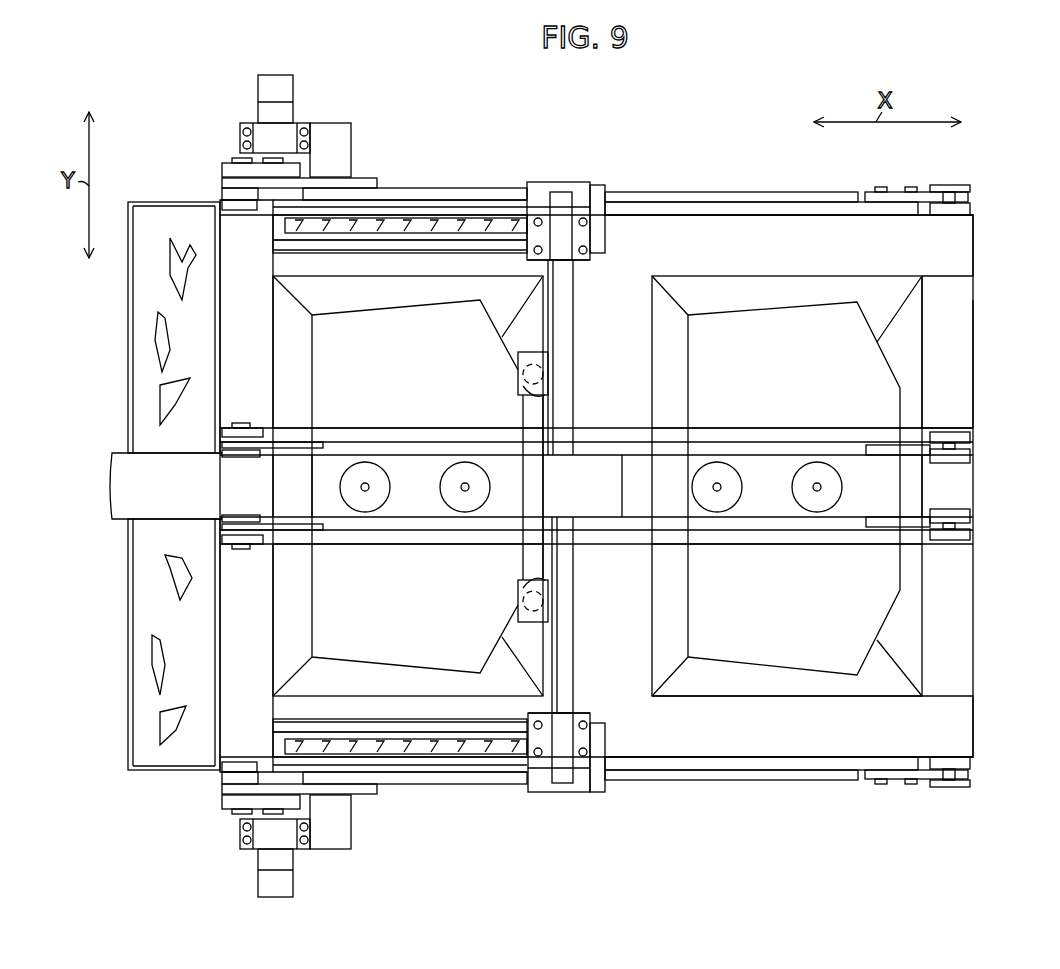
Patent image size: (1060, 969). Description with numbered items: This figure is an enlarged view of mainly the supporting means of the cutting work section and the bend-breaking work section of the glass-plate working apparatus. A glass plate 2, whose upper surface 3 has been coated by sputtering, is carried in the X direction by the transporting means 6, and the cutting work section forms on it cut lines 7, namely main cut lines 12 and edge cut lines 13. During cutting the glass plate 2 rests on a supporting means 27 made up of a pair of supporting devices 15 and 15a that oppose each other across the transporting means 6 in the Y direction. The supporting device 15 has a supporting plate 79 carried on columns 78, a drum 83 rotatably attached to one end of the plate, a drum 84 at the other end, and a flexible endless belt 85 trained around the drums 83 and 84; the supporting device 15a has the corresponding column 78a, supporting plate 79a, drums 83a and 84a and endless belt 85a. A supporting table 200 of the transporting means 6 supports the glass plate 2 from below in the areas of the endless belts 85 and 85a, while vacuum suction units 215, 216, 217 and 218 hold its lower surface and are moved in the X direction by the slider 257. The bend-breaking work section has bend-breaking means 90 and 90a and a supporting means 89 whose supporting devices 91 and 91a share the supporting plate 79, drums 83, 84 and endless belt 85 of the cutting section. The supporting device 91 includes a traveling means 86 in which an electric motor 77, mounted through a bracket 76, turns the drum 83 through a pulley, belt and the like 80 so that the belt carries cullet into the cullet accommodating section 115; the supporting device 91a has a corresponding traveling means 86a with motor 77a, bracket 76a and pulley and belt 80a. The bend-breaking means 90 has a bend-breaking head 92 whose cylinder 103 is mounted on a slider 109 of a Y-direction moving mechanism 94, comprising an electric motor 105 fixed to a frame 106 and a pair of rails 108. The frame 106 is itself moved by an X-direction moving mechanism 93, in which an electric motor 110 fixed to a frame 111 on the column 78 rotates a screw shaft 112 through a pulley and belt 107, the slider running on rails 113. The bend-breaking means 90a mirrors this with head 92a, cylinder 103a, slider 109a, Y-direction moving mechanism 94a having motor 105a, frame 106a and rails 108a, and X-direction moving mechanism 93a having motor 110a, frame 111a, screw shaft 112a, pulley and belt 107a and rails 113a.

The glass plate 2 is at (313, 623).
The upper surface 3 is at (905, 630).
The transporting means 6 is at (985, 437).
The cut lines 7 is at (820, 697).
The main cut lines 12 is at (313, 367).
The edge cut lines 13 is at (300, 487).
The supporting device 15 is at (937, 668).
The supporting device 15a is at (937, 300).
The supporting means 27 is at (937, 355).
The bracket 76 is at (345, 845).
The motor bracket 76a is at (337, 132).
The electric motor 77 is at (296, 870).
The motor 77a is at (295, 95).
The column 78 is at (765, 786).
The guide rail 78a is at (747, 195).
The supporting plate 79 is at (818, 772).
The slide plate 79a is at (828, 207).
The pulley, belt and the like 80 is at (222, 800).
The mounting plate 80a is at (222, 168).
The drum 83 is at (222, 532).
The bearing bracket 83a is at (222, 437).
The drum 84 is at (968, 533).
The bearing bracket 84a is at (968, 432).
The endless belt 85 is at (935, 732).
The endless belt 85a is at (945, 237).
The traveling means 86 is at (253, 862).
The coupling 86a is at (252, 112).
The supporting means 89 is at (245, 348).
The bend-breaking means 90 is at (582, 794).
The bend-breaking means 90a is at (573, 182).
The supporting device 91 is at (245, 625).
The supporting device 91a is at (245, 303).
The bend-breaking head 92 is at (516, 606).
The pulley 92a is at (516, 385).
The X-direction moving mechanism 93 is at (388, 746).
The ball screw 93a is at (383, 228).
The Y-direction moving mechanism 94 is at (568, 672).
The support column 94a is at (570, 282).
The cylinder 103 is at (516, 585).
The pulley housing 103a is at (516, 357).
The electric motor 105 is at (568, 735).
The slide block 105a is at (572, 228).
The frame 106 is at (572, 583).
The arm 106a is at (572, 338).
The pulley, belt and the like 107 is at (598, 792).
The side plate 107a is at (600, 190).
The rails 108 is at (540, 638).
The drive shaft 108a is at (525, 412).
The slider 109 is at (537, 580).
The belt 109a is at (537, 402).
The electric motor 110 is at (545, 781).
The block 110a is at (540, 190).
The frame 111 is at (465, 766).
The guide 111a is at (432, 200).
The screw shaft 112 is at (448, 752).
The rail 112a is at (455, 223).
The rails 113 is at (520, 765).
The nut 113a is at (378, 245).
The cullet accommodating section 115 is at (130, 690).
The supporting table 200 is at (948, 477).
The vacuum suction unit 215 is at (836, 490).
The vacuum suction unit 216 is at (738, 492).
The vacuum suction unit 217 is at (485, 478).
The vacuum suction unit 218 is at (386, 496).
The slider 257 is at (137, 487).